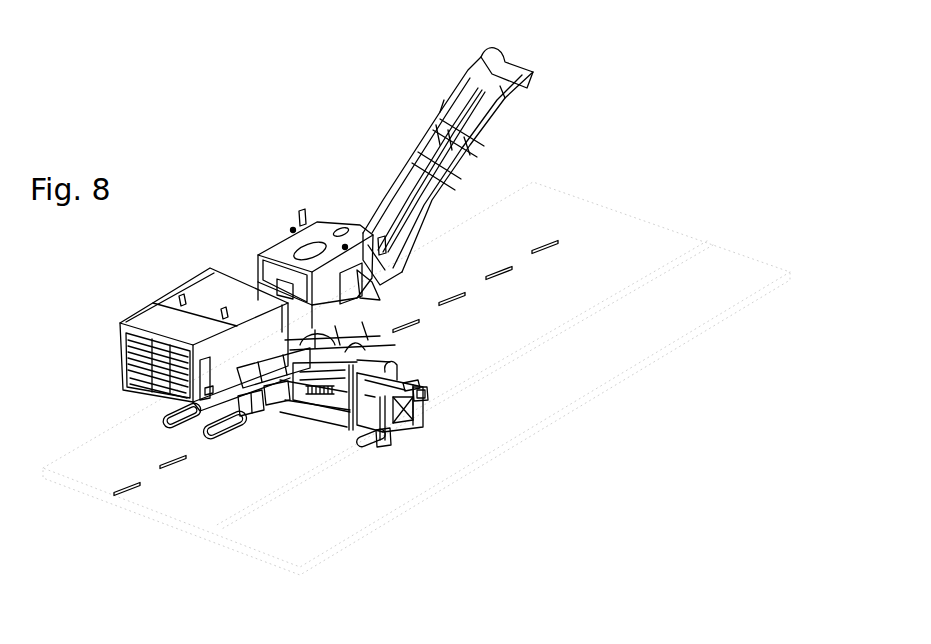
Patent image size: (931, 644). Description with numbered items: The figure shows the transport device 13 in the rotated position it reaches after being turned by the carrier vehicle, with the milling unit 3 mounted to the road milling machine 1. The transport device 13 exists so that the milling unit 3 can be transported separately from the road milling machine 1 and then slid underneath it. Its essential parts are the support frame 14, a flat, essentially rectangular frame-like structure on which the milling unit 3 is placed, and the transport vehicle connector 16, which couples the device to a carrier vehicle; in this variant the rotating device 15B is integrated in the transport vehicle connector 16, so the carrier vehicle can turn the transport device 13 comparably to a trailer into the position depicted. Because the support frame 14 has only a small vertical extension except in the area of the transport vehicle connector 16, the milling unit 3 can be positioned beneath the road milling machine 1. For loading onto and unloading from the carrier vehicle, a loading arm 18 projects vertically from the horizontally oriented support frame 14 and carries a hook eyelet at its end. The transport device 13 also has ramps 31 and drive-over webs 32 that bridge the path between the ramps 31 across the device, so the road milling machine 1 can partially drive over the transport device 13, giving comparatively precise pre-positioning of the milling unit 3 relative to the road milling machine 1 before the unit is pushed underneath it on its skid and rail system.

The road milling machine 1 is at (240, 217).
The milling unit 3 is at (343, 407).
The transport device 13 is at (411, 360).
The support frame 14 is at (380, 440).
The rotating device 15B is at (423, 395).
The transport vehicle connector 16 is at (433, 395).
The loading arm 18 is at (390, 430).
The ramps 31 is at (252, 407).
The drive-over webs 32 is at (275, 395).